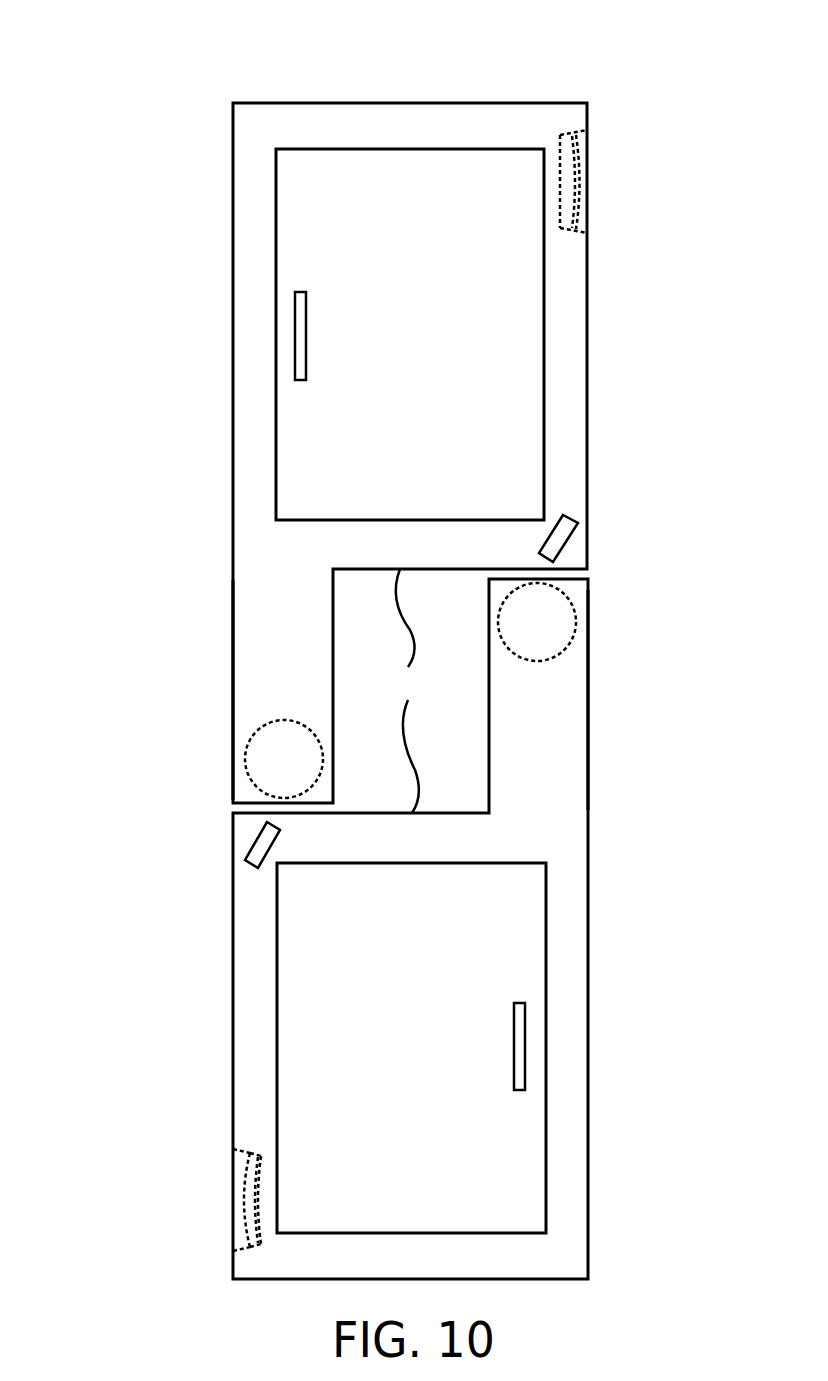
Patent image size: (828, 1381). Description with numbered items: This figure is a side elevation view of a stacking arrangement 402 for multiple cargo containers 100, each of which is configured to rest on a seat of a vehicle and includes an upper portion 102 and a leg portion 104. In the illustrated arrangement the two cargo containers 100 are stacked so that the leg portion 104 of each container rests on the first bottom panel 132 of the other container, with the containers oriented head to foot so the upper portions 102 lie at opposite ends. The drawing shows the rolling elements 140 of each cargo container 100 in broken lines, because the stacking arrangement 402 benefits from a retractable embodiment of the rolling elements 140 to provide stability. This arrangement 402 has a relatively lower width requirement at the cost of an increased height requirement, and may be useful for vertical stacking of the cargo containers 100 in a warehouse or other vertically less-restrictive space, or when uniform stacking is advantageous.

The stacking arrangement 402 is at (118, 55).
The cargo container 100 is at (627, 282).
The upper portion 102 is at (218, 103).
The leg portion 104 is at (218, 570).
The first bottom panel 132 is at (409, 691).
The rolling elements 140 is at (499, 616).